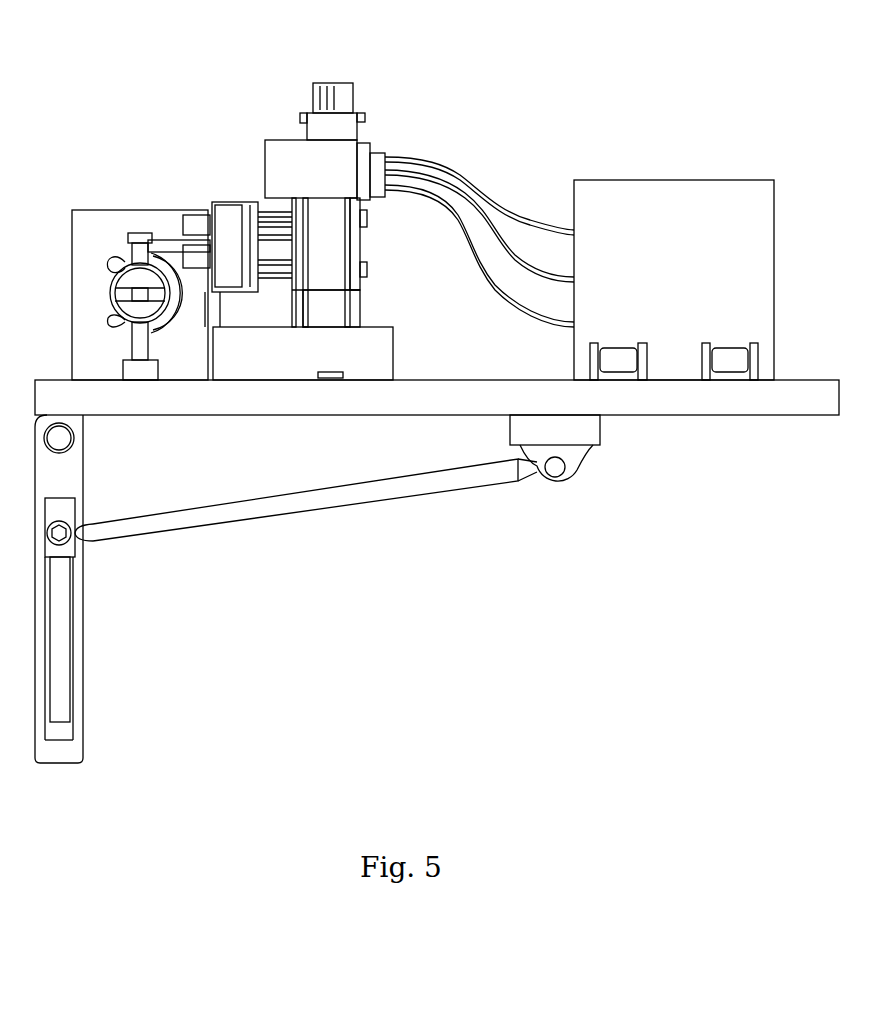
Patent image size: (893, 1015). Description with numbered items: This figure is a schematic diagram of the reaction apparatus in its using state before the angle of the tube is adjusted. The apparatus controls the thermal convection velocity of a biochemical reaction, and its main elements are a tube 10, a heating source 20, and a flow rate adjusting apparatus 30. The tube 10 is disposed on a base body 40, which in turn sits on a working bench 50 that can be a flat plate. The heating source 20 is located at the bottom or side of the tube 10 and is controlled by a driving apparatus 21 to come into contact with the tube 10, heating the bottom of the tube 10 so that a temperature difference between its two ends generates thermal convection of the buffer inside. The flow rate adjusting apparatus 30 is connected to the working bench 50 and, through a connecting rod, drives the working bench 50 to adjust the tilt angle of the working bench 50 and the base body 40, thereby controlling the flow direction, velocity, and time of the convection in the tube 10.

The tube 10 is at (343, 82).
The heating source 20 is at (232, 197).
The driving apparatus 21 is at (118, 266).
The flow rate adjusting apparatus 30 is at (445, 688).
The base body 40 is at (288, 158).
The working bench 50 is at (687, 397).